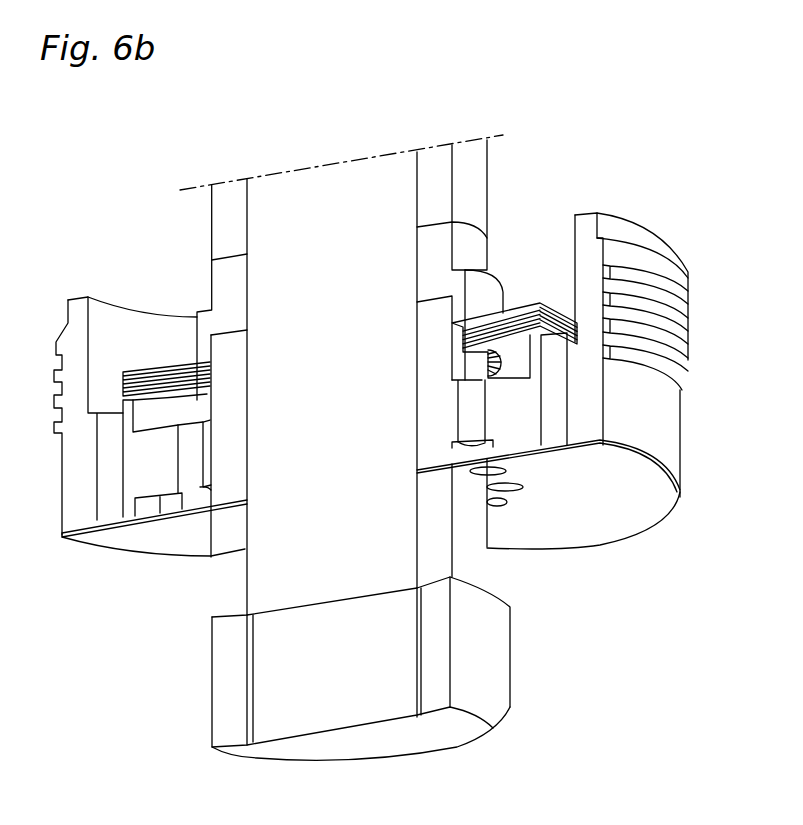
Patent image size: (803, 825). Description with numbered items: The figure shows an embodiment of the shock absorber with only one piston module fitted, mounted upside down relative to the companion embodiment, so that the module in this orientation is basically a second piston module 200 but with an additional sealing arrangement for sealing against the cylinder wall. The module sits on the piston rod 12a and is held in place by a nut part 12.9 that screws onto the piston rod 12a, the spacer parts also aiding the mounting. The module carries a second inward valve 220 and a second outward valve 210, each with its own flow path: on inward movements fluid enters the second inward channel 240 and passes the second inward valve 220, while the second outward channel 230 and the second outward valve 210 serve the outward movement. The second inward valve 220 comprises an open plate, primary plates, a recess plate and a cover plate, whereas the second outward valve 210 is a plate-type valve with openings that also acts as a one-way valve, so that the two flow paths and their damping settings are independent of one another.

The piston rod 12a is at (335, 185).
The nut part 12.9 is at (233, 677).
The second piston module 200 is at (48, 400).
The second outward valve 210 is at (623, 502).
The second inward valve 220 is at (570, 323).
The second outward channel 230 is at (558, 421).
The second inward channel 240 is at (472, 392).